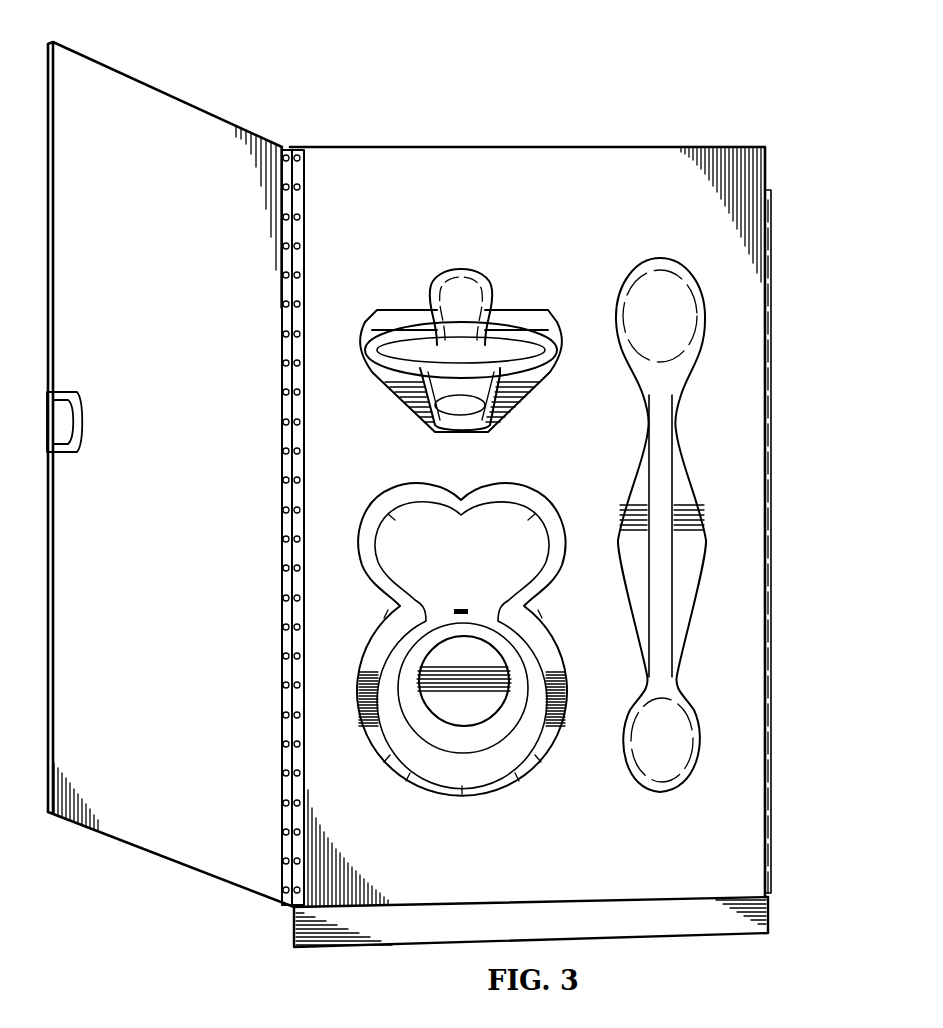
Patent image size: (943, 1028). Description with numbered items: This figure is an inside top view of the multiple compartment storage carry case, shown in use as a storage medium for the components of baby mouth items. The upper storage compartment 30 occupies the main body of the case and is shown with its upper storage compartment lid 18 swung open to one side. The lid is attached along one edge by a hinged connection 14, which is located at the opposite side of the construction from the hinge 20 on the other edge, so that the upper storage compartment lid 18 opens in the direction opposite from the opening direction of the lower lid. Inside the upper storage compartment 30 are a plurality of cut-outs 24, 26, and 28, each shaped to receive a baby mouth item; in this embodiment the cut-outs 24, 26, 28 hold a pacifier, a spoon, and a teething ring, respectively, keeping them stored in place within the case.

The hinged connection 14 is at (292, 160).
The upper storage compartment lid 18 is at (190, 812).
The hinge 20 is at (768, 235).
The cut-out 24 is at (473, 287).
The cut-out 26 is at (665, 487).
The cut-out 28 is at (533, 728).
The upper storage compartment 30 is at (680, 870).